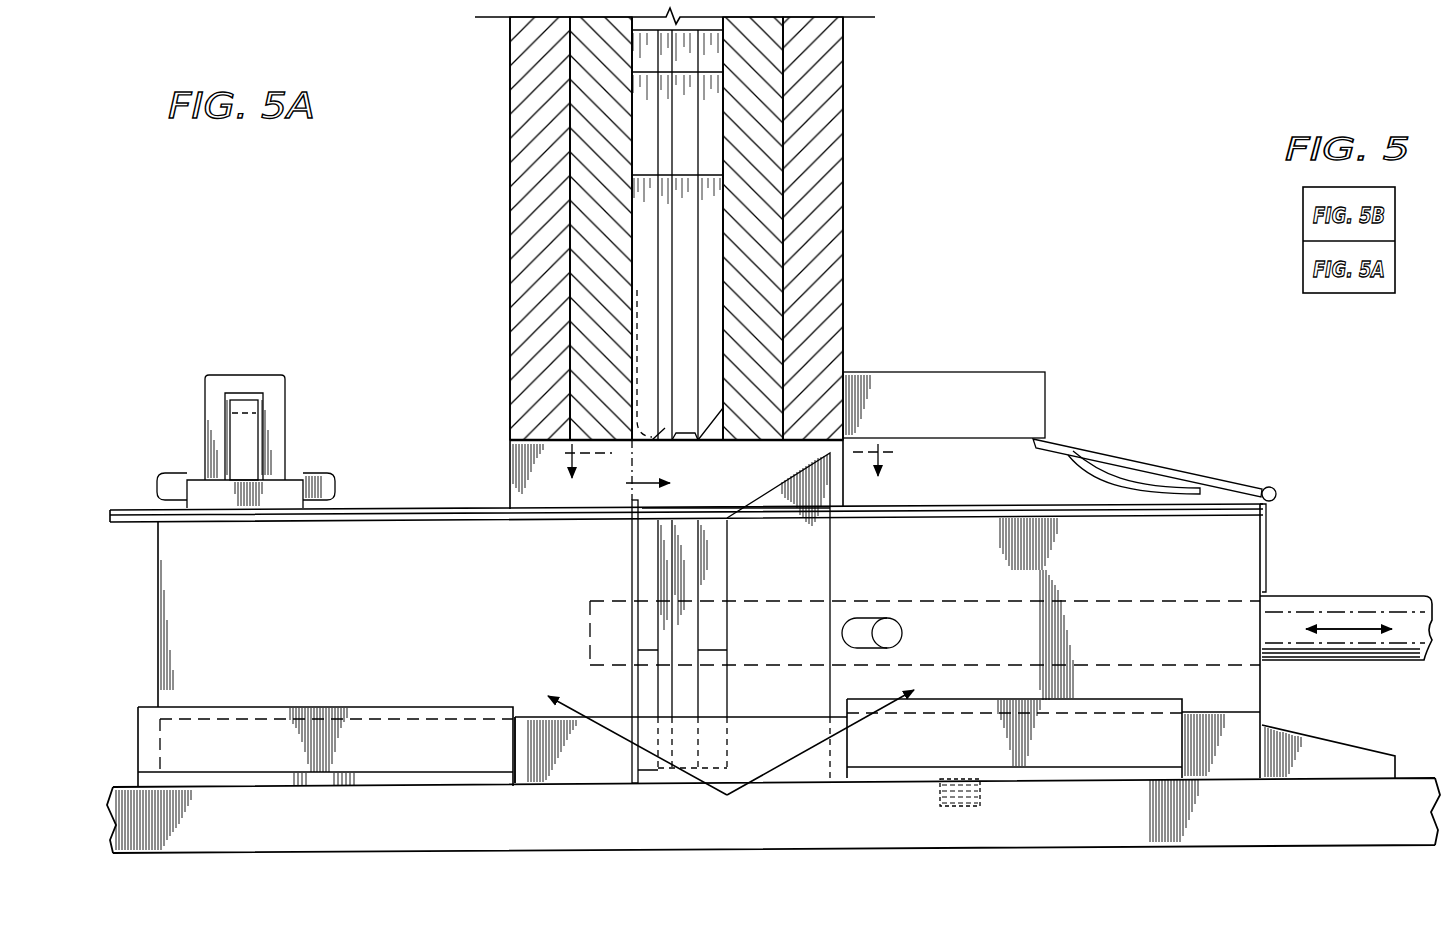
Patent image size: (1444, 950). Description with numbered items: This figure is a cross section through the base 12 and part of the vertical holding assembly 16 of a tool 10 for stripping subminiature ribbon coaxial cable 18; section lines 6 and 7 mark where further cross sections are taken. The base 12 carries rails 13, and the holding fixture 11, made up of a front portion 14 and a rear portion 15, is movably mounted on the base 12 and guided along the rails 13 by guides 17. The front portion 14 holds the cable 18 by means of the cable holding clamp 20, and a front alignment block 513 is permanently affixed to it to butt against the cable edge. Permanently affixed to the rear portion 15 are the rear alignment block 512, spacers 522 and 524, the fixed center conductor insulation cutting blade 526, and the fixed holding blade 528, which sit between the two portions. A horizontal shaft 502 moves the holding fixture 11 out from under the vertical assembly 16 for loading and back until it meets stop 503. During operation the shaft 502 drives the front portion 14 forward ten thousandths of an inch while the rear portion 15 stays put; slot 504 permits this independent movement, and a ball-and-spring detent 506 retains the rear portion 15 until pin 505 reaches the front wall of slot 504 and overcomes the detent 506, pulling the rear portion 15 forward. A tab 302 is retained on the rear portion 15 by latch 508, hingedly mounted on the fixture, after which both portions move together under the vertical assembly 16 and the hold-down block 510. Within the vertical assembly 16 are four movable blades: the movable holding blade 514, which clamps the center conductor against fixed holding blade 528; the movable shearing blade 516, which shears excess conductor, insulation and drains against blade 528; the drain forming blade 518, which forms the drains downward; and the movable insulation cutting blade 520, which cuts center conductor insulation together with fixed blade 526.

The apparatus 10 is at (290, 194).
The holding fixture 11 is at (731, 756).
The base 12 is at (124, 786).
The rails 13 is at (530, 716).
The front portion 14 is at (164, 614).
The rear portion 15 is at (1250, 555).
The vertical holding assembly 16 is at (848, 195).
The guides 17 is at (329, 707).
The subminiature ribbon coaxial cable 18 is at (143, 503).
The cable holding clamp 20 is at (256, 374).
The section line 6- 6 is at (724, 461).
The section line 7- 7 is at (637, 470).
The tab 302 is at (936, 500).
The horizontal shaft 502 is at (1370, 597).
The stop 503 is at (1340, 740).
The slot 504 is at (862, 647).
The pin 505 is at (903, 633).
The detent 506 is at (962, 774).
The latch 508 is at (1170, 470).
The hold-down block 510 is at (886, 372).
The rear alignment block 512 is at (778, 487).
The front alignment block 513 is at (648, 507).
The movable holding blade 514 is at (686, 230).
The movable shearing blade 516 is at (712, 276).
The movable center conductor drain forming blade 518 is at (634, 236).
The movable center conductor insulation cutting blade 520 is at (660, 278).
The spacer 522 is at (646, 692).
The spacer 524 is at (714, 696).
The fixed center conductor insulation cutting blade 526 is at (657, 556).
The fixed holding blade 528 is at (697, 560).